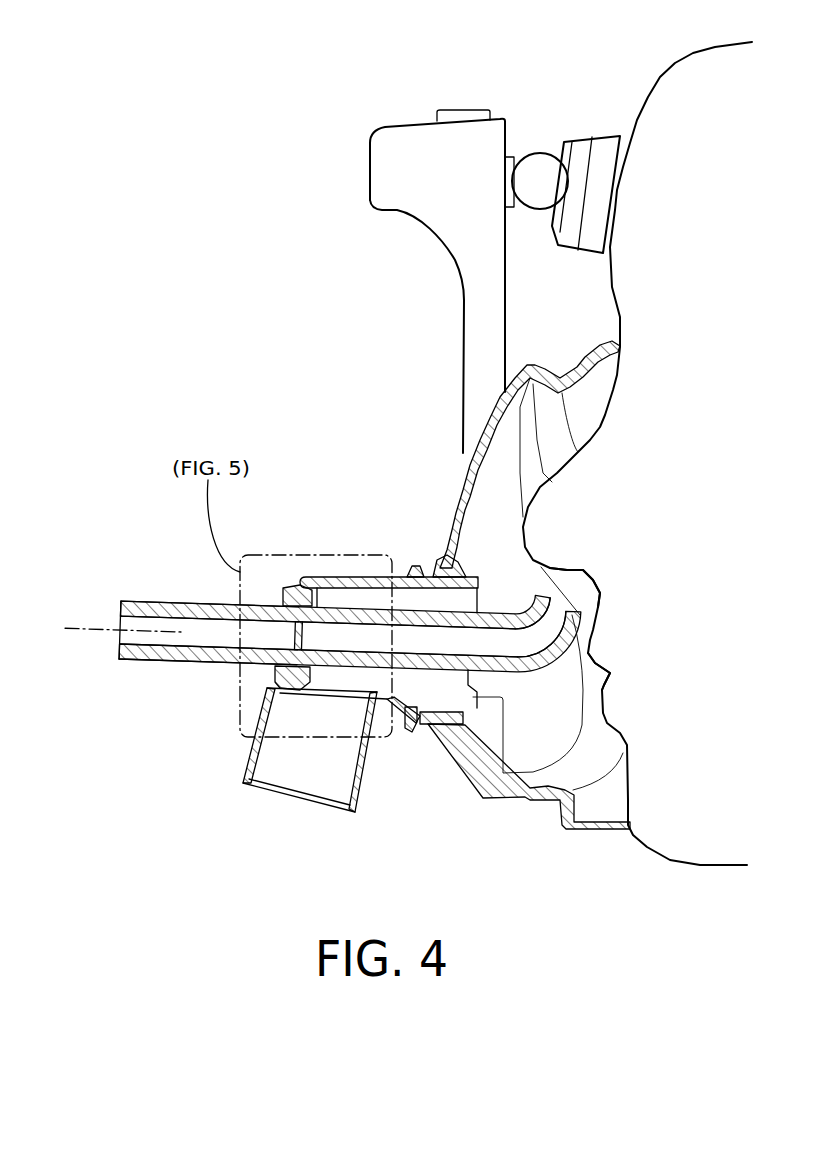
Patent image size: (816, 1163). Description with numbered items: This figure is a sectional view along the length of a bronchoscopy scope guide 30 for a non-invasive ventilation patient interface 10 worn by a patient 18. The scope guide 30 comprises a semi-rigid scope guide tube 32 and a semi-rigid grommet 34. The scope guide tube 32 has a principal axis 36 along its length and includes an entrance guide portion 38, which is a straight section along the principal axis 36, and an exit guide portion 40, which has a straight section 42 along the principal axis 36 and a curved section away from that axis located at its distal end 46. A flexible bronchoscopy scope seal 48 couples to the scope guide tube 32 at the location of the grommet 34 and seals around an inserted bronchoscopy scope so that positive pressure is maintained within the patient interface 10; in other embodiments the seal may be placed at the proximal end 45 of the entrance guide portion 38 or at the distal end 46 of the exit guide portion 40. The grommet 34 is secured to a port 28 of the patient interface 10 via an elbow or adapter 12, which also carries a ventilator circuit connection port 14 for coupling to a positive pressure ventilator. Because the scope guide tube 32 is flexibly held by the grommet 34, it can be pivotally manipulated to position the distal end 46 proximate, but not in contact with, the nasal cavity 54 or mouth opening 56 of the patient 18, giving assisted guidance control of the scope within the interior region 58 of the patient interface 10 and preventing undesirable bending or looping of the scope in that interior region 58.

The non-invasive ventilation patient interface 10 is at (441, 465).
The elbow/adapter 12 is at (345, 572).
The ventilator circuit connection port 14 is at (300, 798).
The patient 18 is at (667, 67).
The port 28 is at (405, 740).
The bronchoscopy scope guide 30 is at (171, 629).
The semi-rigid scope guide tube 32 is at (180, 603).
The semi-rigid grommet 34 is at (297, 581).
The principal axis 36 is at (65, 637).
The entrance guide portion 38 is at (150, 662).
The exit guide portion 40 is at (405, 583).
The straight section 42 is at (366, 650).
The proximal end 45 is at (118, 615).
The distal end 46 is at (505, 656).
The bronchoscopy scope seal 48 is at (284, 635).
The nasal cavity 54 is at (588, 558).
The mouth opening 56 is at (624, 673).
The interior region 58 is at (555, 725).